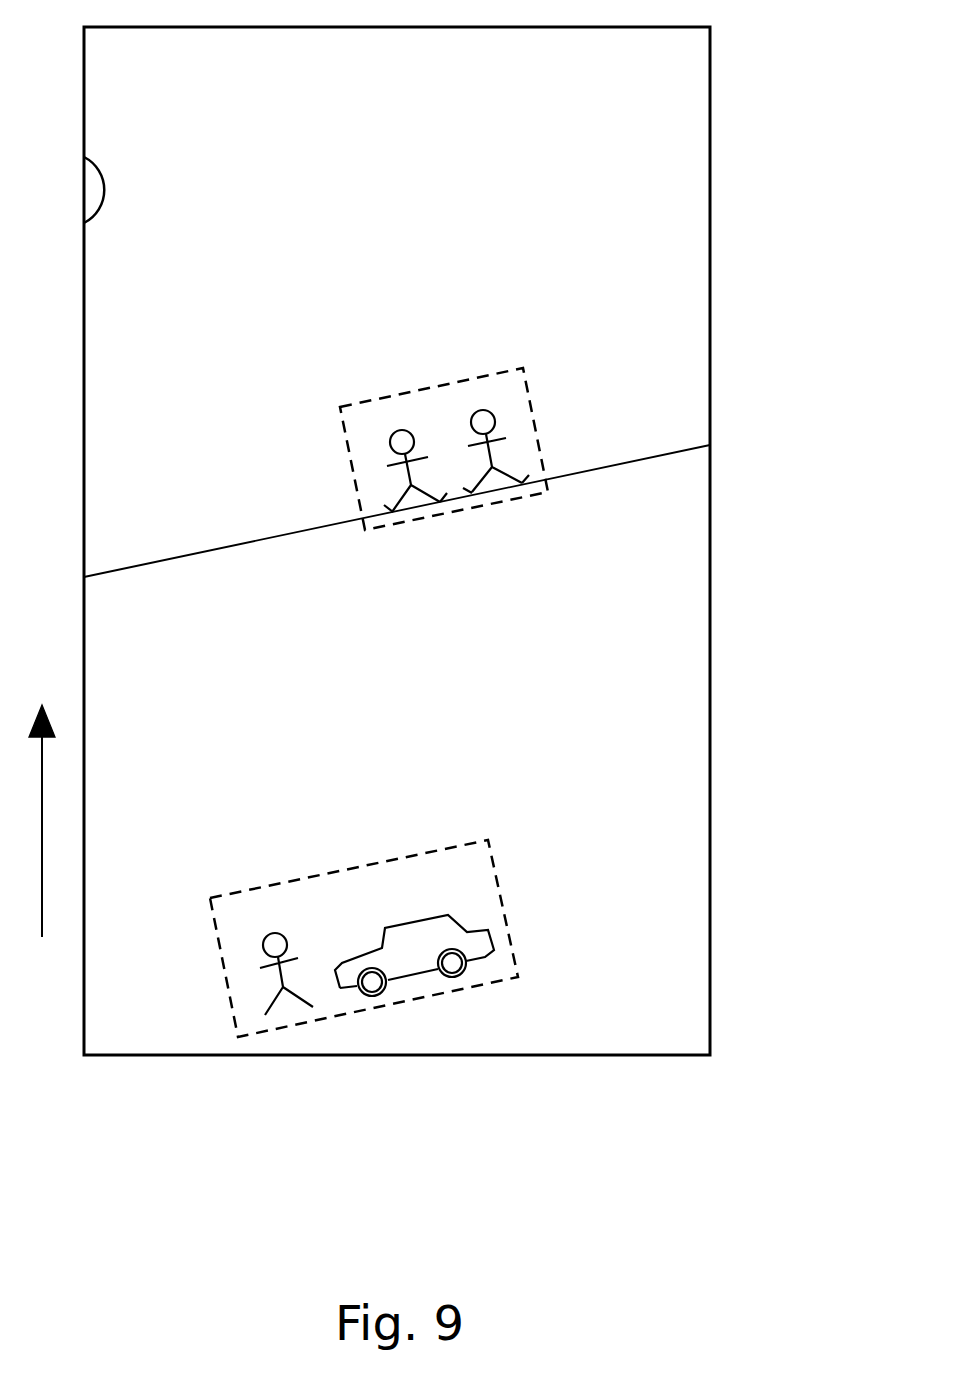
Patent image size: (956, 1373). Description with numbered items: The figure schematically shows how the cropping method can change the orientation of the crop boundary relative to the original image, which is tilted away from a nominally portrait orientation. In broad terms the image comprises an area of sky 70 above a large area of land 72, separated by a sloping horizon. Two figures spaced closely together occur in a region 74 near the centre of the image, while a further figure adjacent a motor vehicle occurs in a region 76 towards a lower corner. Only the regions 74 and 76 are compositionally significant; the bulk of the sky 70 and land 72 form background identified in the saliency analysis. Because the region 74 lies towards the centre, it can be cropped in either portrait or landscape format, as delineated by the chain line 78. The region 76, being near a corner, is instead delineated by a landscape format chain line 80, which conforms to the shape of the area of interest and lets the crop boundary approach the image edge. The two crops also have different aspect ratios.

The area of sky 70 is at (647, 190).
The area of land 72 is at (562, 770).
The region containing two figures 74 is at (645, 548).
The region containing figure and motor vehicle 76 is at (502, 961).
The chain line 78 is at (540, 420).
The chain line 80 is at (228, 997).